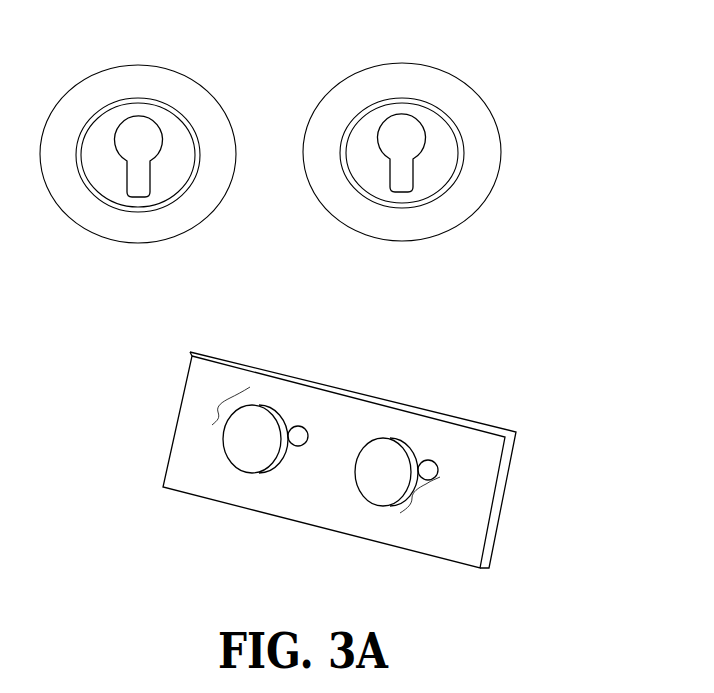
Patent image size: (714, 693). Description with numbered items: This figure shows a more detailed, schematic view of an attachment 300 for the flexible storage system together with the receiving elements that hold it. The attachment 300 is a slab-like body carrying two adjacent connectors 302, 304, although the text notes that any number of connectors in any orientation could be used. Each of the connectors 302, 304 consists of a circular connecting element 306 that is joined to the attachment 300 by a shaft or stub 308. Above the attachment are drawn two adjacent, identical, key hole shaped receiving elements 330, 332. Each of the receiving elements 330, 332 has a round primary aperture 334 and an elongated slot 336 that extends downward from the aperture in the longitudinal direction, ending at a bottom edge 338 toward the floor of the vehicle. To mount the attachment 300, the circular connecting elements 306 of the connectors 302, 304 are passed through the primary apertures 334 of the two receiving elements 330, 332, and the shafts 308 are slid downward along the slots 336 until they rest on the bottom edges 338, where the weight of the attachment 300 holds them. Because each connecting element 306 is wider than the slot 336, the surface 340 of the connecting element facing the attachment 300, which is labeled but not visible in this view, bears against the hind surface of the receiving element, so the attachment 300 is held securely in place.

The attachment 300 is at (490, 510).
The connector 302 is at (236, 415).
The connector 304 is at (428, 484).
The connecting element 306 is at (383, 482).
The shaft 308 is at (420, 467).
The receiving element 330 is at (110, 240).
The receiving element 332 is at (497, 183).
The primary aperture 334 is at (402, 117).
The elongated slot 336 is at (390, 183).
The bottom edge 338 is at (408, 192).
The surface 340 is at (280, 408).